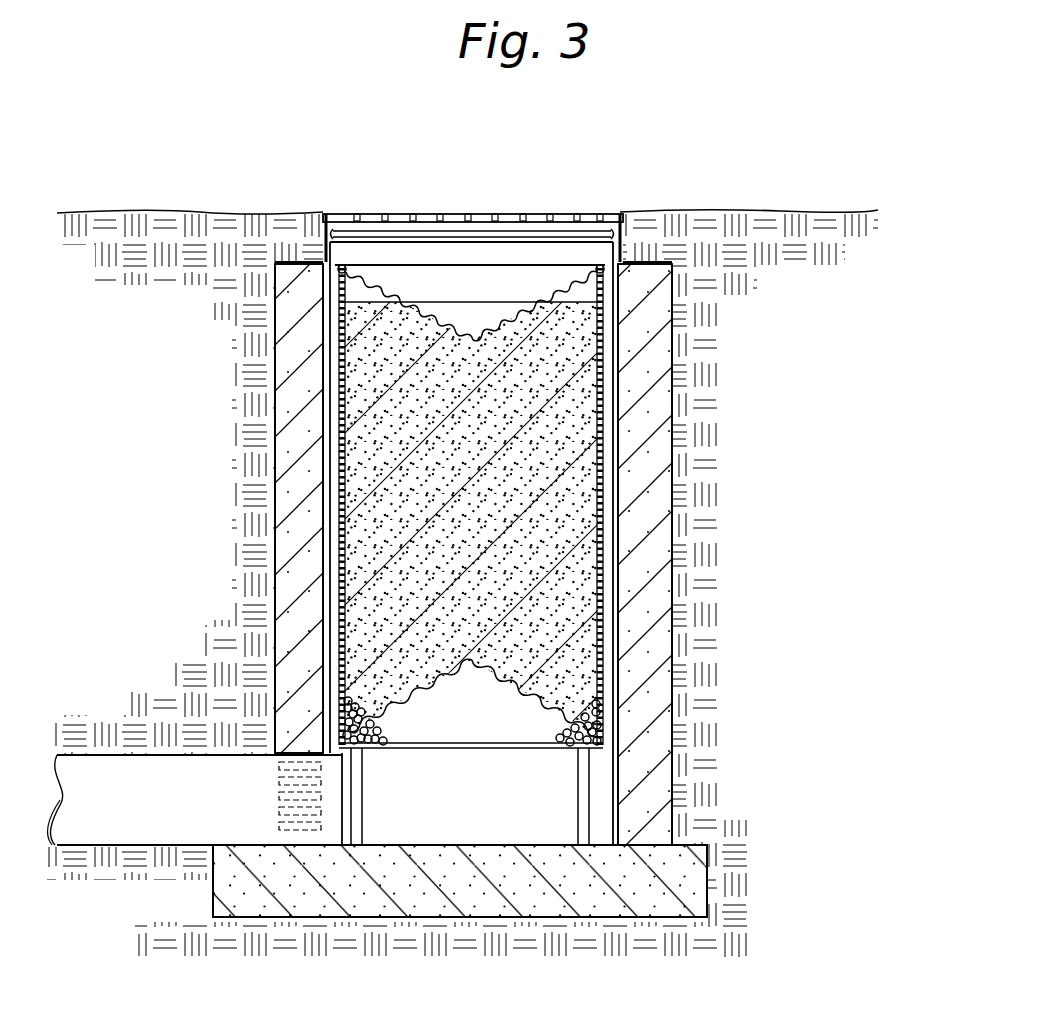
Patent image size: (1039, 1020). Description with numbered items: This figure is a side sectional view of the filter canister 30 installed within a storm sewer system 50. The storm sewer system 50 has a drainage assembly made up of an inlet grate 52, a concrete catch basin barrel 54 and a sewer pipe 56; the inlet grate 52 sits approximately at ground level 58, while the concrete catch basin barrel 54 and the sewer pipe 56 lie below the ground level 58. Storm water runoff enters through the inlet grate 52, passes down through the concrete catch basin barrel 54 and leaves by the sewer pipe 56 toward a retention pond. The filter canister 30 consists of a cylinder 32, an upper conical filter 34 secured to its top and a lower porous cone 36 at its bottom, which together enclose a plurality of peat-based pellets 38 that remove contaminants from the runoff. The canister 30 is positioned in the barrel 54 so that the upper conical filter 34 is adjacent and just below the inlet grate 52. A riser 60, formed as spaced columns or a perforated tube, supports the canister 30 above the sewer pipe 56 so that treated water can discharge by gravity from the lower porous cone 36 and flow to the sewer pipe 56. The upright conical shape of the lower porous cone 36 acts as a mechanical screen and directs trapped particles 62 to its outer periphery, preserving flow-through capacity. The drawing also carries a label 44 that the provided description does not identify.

The filter canister 30 is at (552, 543).
The cylinder 32 is at (387, 506).
The upper conical filter 34 is at (504, 236).
The lower porous cone 36 is at (540, 712).
The peat-based pellets 38 is at (381, 519).
The upper membrane 44 is at (471, 255).
The storm sewer system 50 is at (600, 190).
The inlet grate 52 is at (462, 207).
The concrete catch basin barrel 54 is at (530, 554).
The sewer pipe 56 is at (175, 805).
The ground level 58 is at (158, 210).
The riser 60 is at (563, 796).
The particles 62 is at (553, 713).